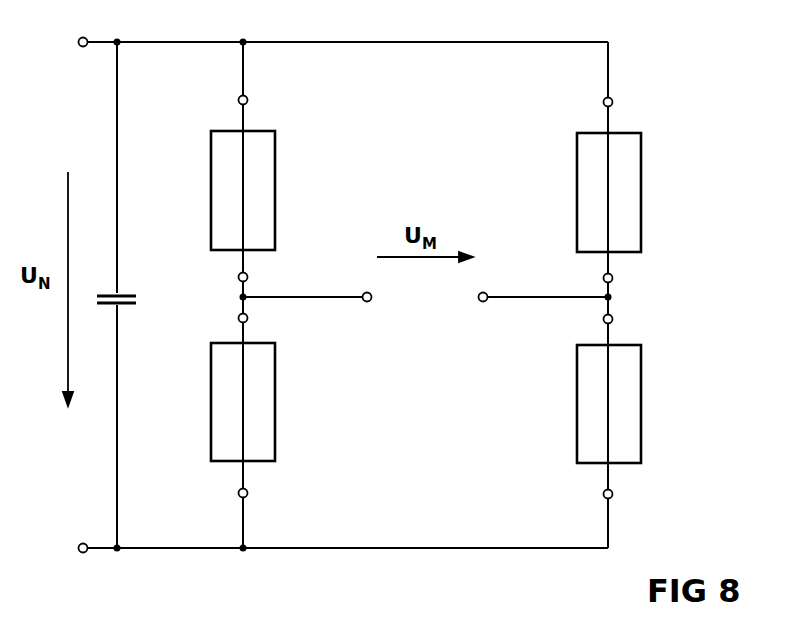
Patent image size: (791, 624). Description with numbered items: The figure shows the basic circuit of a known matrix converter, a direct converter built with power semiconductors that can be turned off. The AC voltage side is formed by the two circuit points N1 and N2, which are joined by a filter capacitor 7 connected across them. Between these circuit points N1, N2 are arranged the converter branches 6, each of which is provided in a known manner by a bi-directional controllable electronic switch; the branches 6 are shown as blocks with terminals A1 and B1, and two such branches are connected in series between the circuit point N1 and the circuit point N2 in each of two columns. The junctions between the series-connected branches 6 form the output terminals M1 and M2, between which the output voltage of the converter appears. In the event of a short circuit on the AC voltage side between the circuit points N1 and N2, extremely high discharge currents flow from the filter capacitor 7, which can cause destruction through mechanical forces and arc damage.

The converter branch 6 is at (275, 192).
The filter capacitor 7 is at (118, 292).
The circuit point N1 is at (62, 45).
The circuit point N2 is at (62, 551).
The module terminal A1 is at (444, 212).
The module terminal B1 is at (443, 388).
The output terminal M1 is at (368, 316).
The output terminal M2 is at (478, 316).